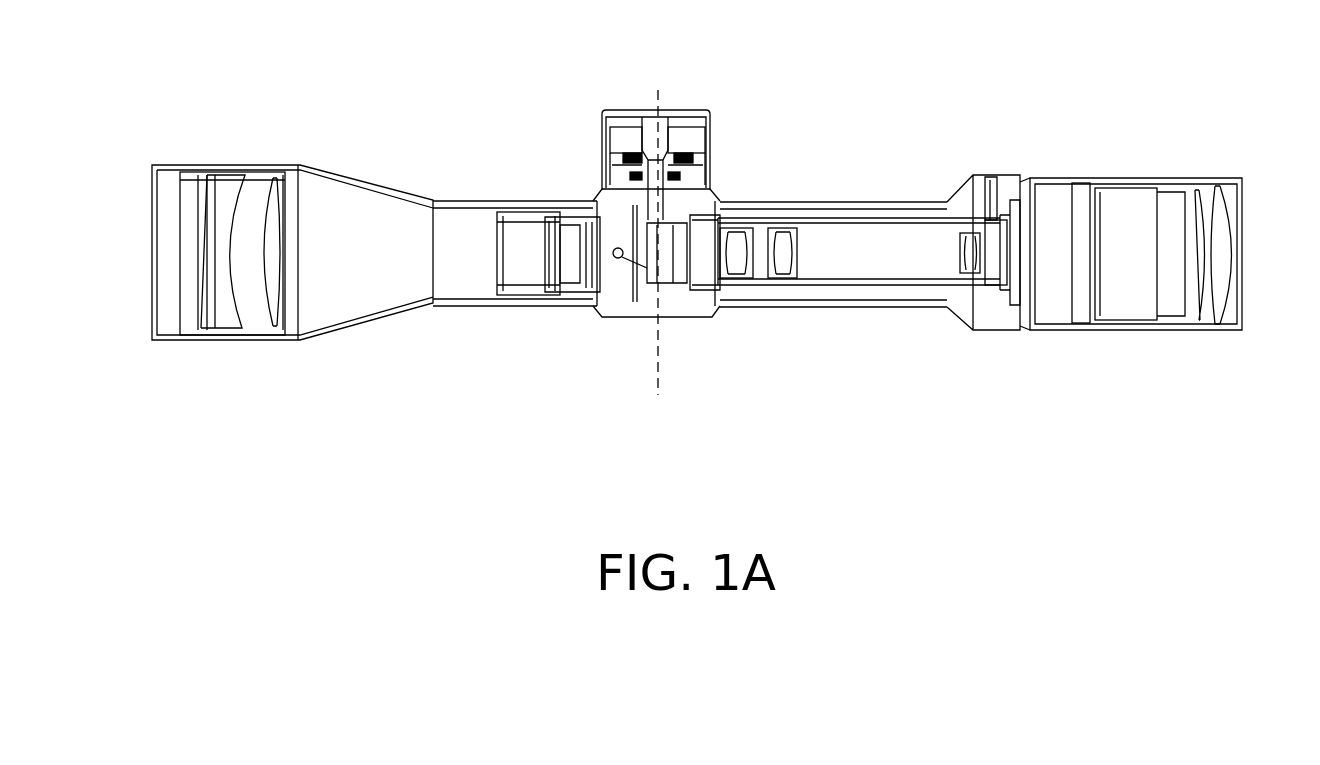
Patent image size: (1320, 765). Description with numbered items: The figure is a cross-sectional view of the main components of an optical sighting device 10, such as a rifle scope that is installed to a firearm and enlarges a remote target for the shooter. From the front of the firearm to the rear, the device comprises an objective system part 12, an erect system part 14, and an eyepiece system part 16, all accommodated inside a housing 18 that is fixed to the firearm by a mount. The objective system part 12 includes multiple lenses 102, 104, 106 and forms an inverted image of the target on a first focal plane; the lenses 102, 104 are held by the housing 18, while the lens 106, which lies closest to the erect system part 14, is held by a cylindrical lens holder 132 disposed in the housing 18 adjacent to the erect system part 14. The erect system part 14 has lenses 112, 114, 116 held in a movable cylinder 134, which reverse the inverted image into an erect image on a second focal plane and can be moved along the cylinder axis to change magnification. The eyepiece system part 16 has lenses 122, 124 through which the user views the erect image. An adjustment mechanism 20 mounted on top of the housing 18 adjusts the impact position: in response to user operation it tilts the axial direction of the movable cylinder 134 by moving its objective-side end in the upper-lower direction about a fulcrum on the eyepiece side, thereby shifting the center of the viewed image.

The optical sighting device 10 is at (1093, 48).
The objective system part 12 is at (583, 432).
The erect system part 14 is at (1068, 432).
The eyepiece system part 16 is at (1092, 432).
The housing 18 is at (313, 169).
The adjustment mechanism 20 is at (697, 110).
The lens 102 is at (208, 325).
The lens 104 is at (255, 323).
The lens 106 is at (572, 283).
The lens 112 is at (737, 268).
The lens 114 is at (782, 268).
The lens 116 is at (975, 262).
The lens 122 is at (1170, 308).
The lens 124 is at (1222, 310).
The lens holder 132 is at (575, 213).
The movable cylinder 134 is at (852, 218).